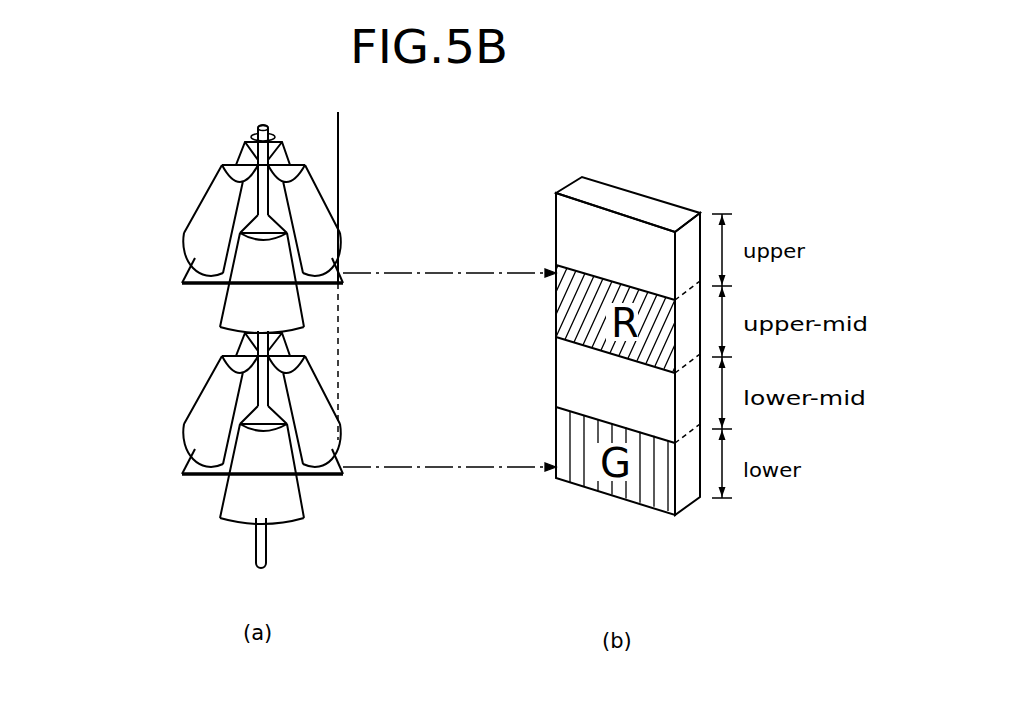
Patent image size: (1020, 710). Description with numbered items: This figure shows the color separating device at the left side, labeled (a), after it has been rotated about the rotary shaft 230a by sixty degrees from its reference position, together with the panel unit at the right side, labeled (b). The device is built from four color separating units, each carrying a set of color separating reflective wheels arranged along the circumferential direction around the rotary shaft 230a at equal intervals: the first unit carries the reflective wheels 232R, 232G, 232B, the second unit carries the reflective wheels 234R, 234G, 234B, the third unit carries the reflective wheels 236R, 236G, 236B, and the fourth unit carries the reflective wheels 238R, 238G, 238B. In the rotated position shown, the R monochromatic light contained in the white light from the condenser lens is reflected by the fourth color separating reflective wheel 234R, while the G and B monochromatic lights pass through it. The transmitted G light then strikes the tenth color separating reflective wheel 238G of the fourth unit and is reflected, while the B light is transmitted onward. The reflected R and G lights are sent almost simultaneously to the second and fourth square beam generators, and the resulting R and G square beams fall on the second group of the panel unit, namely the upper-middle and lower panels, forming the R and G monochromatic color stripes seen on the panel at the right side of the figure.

The rotary shaft 230a is at (258, 126).
The color separating reflective wheel 232R is at (290, 153).
The color separating reflective wheel 232G is at (318, 190).
The color separating reflective wheel 232B is at (198, 212).
The fourth color separating reflective wheel 234R is at (336, 268).
The color separating reflective wheel 234G is at (300, 298).
The color separating reflective wheel 234B is at (190, 268).
The color separating reflective wheel 236R is at (198, 396).
The color separating reflective wheel 236G is at (292, 345).
The color separating reflective wheel 236B is at (322, 394).
The color separating reflective wheel 238R is at (188, 460).
The tenth color separating reflective wheel 238G is at (334, 456).
The color separating reflective wheel 238B is at (300, 504).